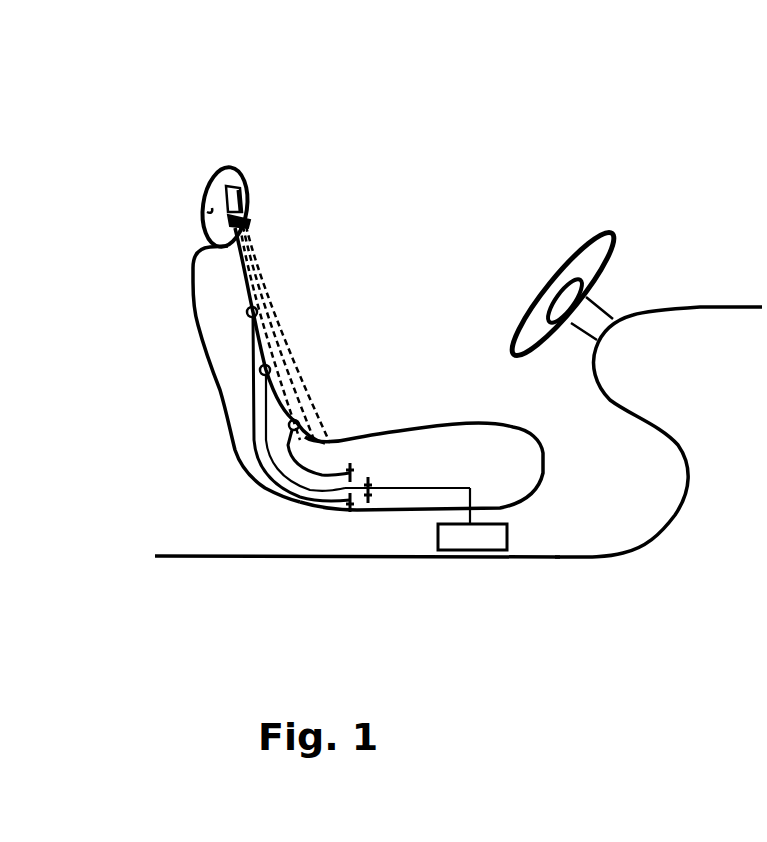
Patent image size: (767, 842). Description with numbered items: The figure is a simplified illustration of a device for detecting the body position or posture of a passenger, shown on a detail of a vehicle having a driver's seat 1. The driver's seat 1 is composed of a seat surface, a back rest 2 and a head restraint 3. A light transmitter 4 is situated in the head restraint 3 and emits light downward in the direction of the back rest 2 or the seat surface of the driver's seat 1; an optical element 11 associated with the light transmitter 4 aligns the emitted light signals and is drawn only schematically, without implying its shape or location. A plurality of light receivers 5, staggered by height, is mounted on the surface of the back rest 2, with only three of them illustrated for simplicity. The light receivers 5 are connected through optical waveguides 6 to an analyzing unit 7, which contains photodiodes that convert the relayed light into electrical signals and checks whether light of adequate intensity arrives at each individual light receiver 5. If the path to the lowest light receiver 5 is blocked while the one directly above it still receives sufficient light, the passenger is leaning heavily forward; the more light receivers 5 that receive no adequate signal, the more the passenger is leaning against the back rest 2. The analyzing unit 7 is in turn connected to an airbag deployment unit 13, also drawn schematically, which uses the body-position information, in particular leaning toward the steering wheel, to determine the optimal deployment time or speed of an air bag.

The driver's seat 1 is at (500, 473).
The back rest 2 is at (225, 329).
The head restraint 3 is at (208, 212).
The light transmitter 4 is at (245, 183).
The light receivers 5 is at (262, 305).
The optical waveguides 6 is at (252, 410).
The analyzing unit 7 is at (372, 500).
The optical element 11 is at (248, 202).
The airbag deployment unit 13 is at (480, 540).